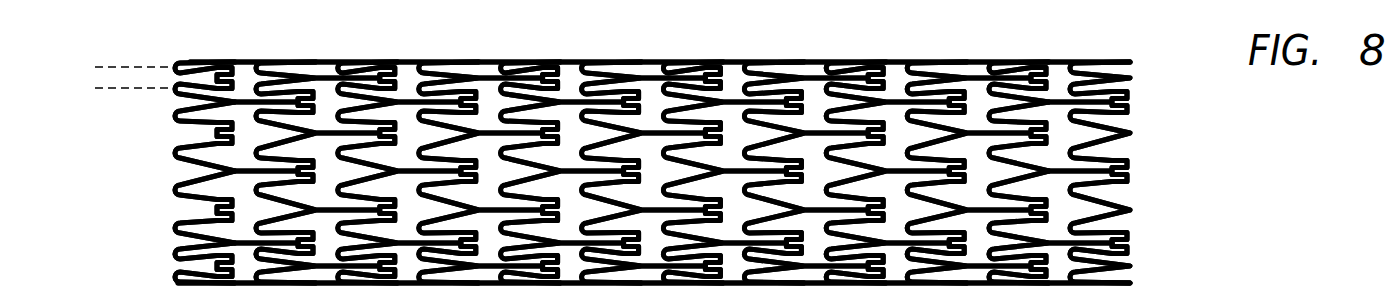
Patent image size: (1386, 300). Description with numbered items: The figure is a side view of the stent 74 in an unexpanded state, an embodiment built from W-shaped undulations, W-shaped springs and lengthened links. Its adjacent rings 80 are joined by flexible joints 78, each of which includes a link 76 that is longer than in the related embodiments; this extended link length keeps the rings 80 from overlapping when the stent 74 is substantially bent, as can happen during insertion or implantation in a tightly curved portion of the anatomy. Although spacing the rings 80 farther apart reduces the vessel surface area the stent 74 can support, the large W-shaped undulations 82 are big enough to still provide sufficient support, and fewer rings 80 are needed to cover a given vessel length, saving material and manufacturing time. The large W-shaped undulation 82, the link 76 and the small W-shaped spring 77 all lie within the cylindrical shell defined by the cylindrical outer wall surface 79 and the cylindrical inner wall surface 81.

The stent 74 is at (654, 141).
The link 76 is at (330, 82).
The small W-shaped spring 77 is at (1131, 166).
The flexible joint 78 is at (1131, 98).
The cylindrical outer wall surface 79 is at (125, 64).
The ring 80 is at (745, 60).
The cylindrical inner wall surface 81 is at (131, 89).
The large W-shaped undulation 82 is at (175, 193).